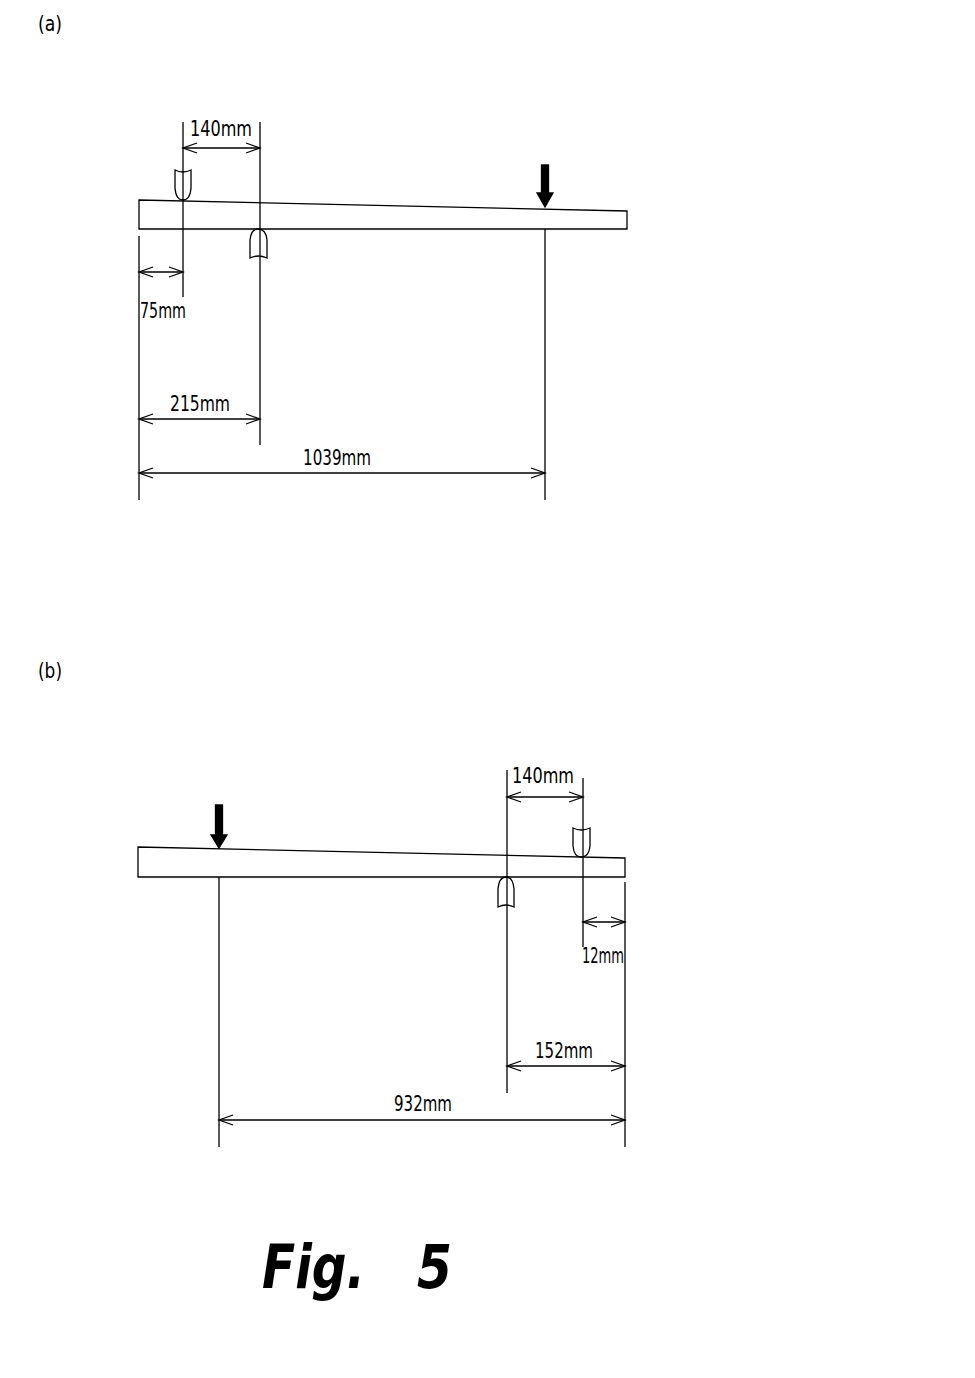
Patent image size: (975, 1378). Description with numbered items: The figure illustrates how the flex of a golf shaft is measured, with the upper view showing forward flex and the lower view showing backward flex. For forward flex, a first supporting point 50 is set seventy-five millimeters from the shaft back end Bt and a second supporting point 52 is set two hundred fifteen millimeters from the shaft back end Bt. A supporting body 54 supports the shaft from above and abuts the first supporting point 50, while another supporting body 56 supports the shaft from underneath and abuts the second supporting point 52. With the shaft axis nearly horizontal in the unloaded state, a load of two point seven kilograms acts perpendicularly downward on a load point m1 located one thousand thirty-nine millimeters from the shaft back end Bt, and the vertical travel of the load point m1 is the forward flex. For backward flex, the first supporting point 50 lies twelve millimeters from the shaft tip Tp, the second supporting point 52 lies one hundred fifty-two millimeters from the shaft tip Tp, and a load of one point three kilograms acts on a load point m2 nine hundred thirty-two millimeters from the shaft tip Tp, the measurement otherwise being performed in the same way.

The first supporting point 50 is at (180, 200).
The second supporting point 52 is at (252, 229).
The supporting body 54 is at (190, 186).
The supporting body 56 is at (267, 245).
The shaft back end Bt is at (139, 216).
The shaft tip Tp is at (628, 219).
The load point m1 is at (550, 207).
The load point m2 is at (222, 850).